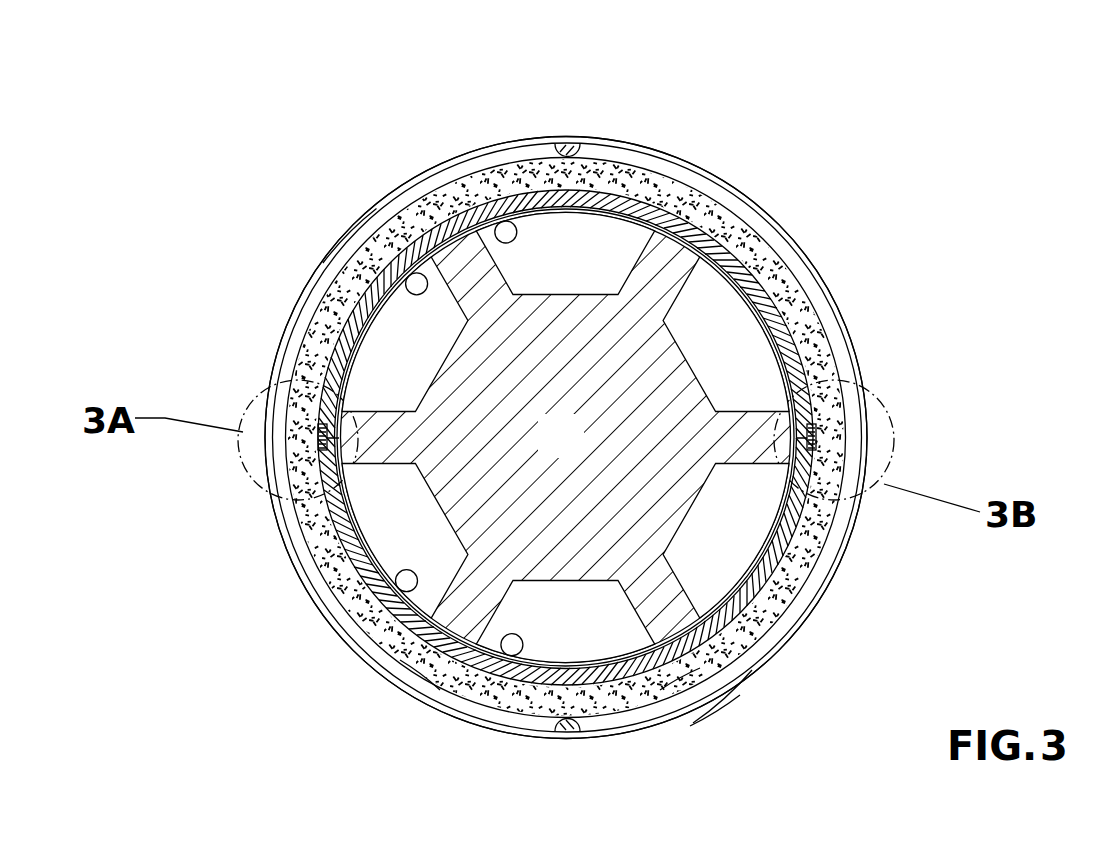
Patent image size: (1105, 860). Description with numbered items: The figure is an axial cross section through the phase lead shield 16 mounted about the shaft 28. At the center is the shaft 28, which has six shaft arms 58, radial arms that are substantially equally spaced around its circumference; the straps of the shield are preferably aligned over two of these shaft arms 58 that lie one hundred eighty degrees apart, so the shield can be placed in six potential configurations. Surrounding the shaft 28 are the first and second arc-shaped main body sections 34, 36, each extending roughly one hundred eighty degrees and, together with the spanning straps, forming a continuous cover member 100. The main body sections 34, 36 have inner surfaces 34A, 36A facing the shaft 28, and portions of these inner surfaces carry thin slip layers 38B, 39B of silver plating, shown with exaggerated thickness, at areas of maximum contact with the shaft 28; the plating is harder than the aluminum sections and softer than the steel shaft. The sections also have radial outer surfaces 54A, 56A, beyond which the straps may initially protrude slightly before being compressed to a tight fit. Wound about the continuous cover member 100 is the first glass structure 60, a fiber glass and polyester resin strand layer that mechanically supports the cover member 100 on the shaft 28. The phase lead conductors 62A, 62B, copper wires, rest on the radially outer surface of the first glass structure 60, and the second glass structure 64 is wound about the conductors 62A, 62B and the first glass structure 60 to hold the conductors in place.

The phase lead shield 16 is at (818, 186).
The shaft 28 is at (578, 453).
The first main body section 34 is at (765, 273).
The inner surface of first main body section 34A is at (505, 221).
The second main body section 36 is at (420, 652).
The inner surface of second main body section 36A is at (507, 700).
The slip layer 38B is at (407, 274).
The slip layer 39B is at (362, 612).
The radial outer surface of first main body section 54A is at (336, 330).
The radial outer surface of second main body section 56A is at (336, 533).
The shaft arm 58 is at (483, 255).
The first glass structure 60 is at (683, 178).
The phase lead conductor 62A is at (567, 143).
The phase lead conductor 62B is at (568, 737).
The second glass structure 64 is at (440, 158).
The continuous cover member 100 is at (690, 665).